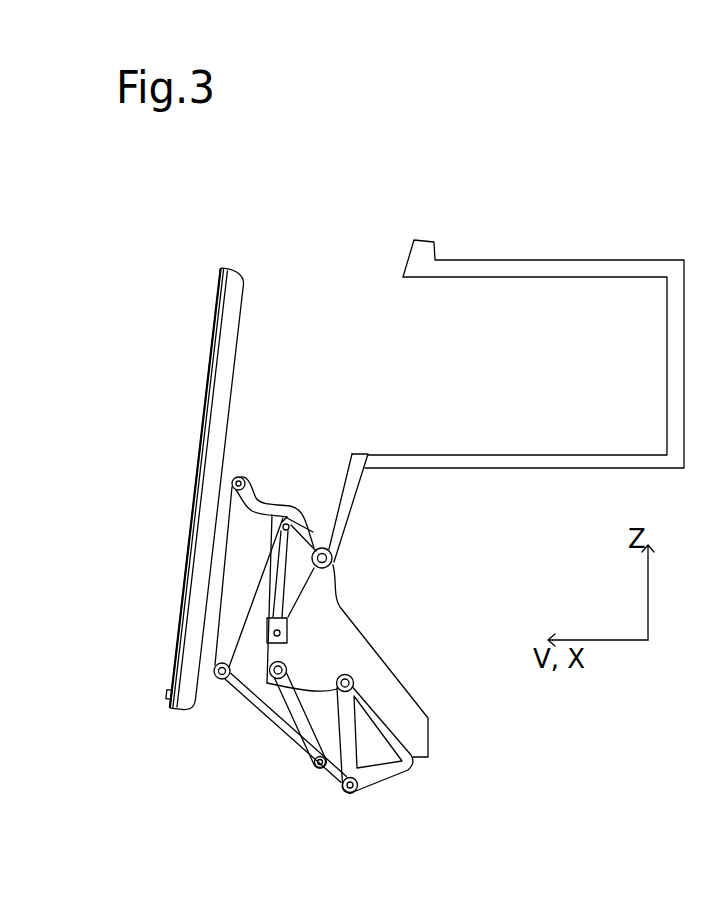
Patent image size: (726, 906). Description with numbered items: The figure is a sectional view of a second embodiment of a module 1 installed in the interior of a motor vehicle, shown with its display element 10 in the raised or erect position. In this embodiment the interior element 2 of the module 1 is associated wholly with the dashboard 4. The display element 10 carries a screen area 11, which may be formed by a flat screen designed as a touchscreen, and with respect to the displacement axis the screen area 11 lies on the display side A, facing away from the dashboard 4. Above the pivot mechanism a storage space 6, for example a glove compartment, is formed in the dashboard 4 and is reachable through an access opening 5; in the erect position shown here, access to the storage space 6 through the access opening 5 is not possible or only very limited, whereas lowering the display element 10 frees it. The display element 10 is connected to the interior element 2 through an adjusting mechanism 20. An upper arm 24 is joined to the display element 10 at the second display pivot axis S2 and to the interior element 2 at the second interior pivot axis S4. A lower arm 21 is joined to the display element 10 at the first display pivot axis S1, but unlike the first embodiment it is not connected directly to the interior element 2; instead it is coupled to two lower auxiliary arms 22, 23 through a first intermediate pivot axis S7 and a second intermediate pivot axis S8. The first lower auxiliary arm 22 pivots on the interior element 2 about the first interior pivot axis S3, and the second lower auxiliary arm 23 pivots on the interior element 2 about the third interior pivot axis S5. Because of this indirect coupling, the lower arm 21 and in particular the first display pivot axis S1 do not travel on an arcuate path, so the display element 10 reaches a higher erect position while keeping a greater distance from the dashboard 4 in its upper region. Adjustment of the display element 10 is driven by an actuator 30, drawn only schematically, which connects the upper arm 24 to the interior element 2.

The module 1 is at (170, 290).
The display side A is at (124, 432).
The display element 10 is at (168, 684).
The screen area 11 is at (199, 488).
The access opening 5 is at (381, 363).
The storage space 6 is at (532, 385).
The dashboard 4 is at (318, 478).
The upper arm 24 is at (260, 519).
The interior element 2 is at (387, 673).
The actuator 30 is at (283, 598).
The adjusting mechanism 20 is at (424, 786).
The lower arm 21 is at (263, 716).
The first lower auxiliary arm 22 is at (289, 718).
The second lower auxiliary arm 23 is at (381, 780).
The first display pivot axis S1 is at (218, 679).
The second display pivot axis S2 is at (232, 480).
The first interior pivot axis S3 is at (285, 666).
The second interior pivot axis S4 is at (331, 567).
The third interior pivot axis S5 is at (353, 686).
The first intermediate pivot axis S7 is at (320, 768).
The second intermediate pivot axis S8 is at (346, 793).